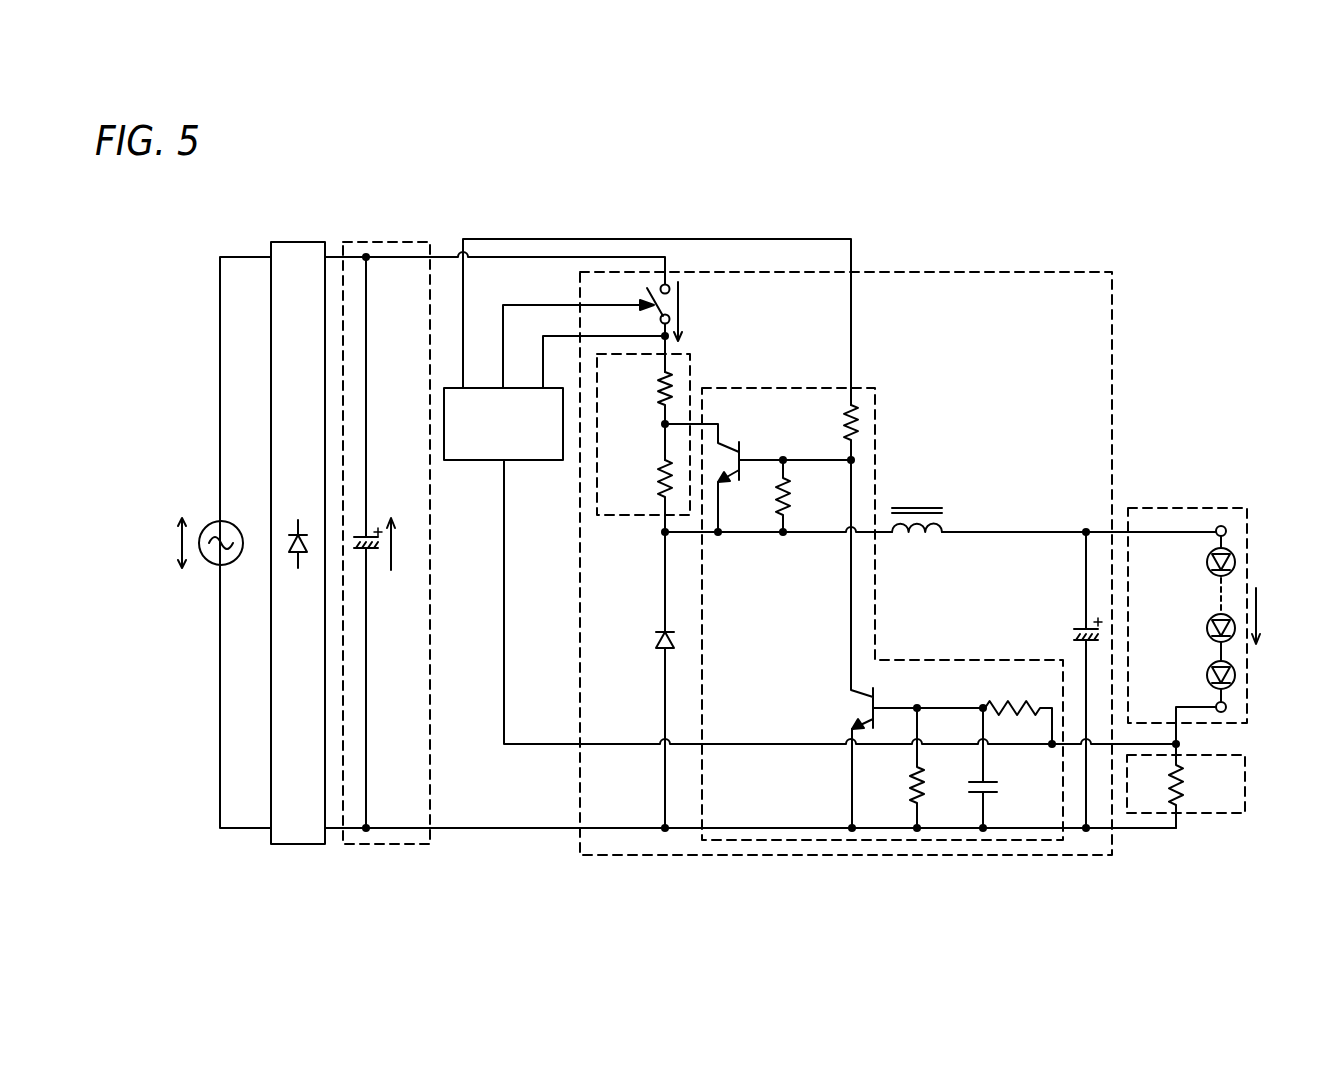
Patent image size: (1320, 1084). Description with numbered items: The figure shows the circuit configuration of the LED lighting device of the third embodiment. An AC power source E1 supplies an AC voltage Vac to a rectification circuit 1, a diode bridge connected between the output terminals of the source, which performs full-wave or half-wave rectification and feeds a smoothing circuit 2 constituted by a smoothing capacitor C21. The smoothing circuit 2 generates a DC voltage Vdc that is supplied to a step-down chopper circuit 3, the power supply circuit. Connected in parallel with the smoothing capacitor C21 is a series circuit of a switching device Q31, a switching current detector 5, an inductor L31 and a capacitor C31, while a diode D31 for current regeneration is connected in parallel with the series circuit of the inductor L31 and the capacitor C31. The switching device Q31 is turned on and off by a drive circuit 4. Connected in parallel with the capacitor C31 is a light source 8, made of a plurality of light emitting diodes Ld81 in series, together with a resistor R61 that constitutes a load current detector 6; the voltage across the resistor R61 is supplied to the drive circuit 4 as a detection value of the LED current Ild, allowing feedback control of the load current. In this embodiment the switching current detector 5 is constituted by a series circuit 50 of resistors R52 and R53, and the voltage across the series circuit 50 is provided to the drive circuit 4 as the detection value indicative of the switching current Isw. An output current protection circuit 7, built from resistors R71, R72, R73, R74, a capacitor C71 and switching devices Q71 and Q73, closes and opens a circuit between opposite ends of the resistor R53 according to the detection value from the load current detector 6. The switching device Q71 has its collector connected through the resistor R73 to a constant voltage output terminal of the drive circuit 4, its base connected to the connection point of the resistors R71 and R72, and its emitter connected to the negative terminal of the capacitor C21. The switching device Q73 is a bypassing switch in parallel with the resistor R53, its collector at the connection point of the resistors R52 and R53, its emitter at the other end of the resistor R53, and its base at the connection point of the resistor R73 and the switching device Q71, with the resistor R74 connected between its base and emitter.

The rectification circuit 1 is at (297, 242).
The smoothing circuit 2 is at (391, 242).
The step-down chopper circuit 3 is at (972, 272).
The drive circuit 4 is at (528, 462).
The switching current detector 5 is at (630, 517).
The series circuit 50 is at (672, 421).
The load current detector 6 is at (1247, 775).
The output current protection circuit 7 is at (957, 658).
The light source 8 is at (1188, 507).
The AC power source E1 is at (230, 523).
The AC voltage Vac is at (183, 564).
The smoothing capacitor C21 is at (385, 542).
The DC voltage Vdc is at (399, 563).
The switching device Q31 is at (688, 322).
The switching current Isw is at (702, 319).
The resistor R52 is at (638, 415).
The resistor R53 is at (638, 494).
The switching device Q73 is at (758, 466).
The resistor R73 is at (824, 432).
The resistor R74 is at (810, 496).
The switching device Q71 is at (891, 644).
The resistor R71 is at (1018, 704).
The resistor R72 is at (892, 768).
The capacitor C71 is at (1007, 768).
The diode D31 is at (642, 680).
The inductor L31 is at (917, 542).
The capacitor C31 is at (1068, 680).
The light emitting diode Ld81 is at (1186, 635).
The LED current Ild is at (1276, 616).
The resistor R61 is at (1203, 786).